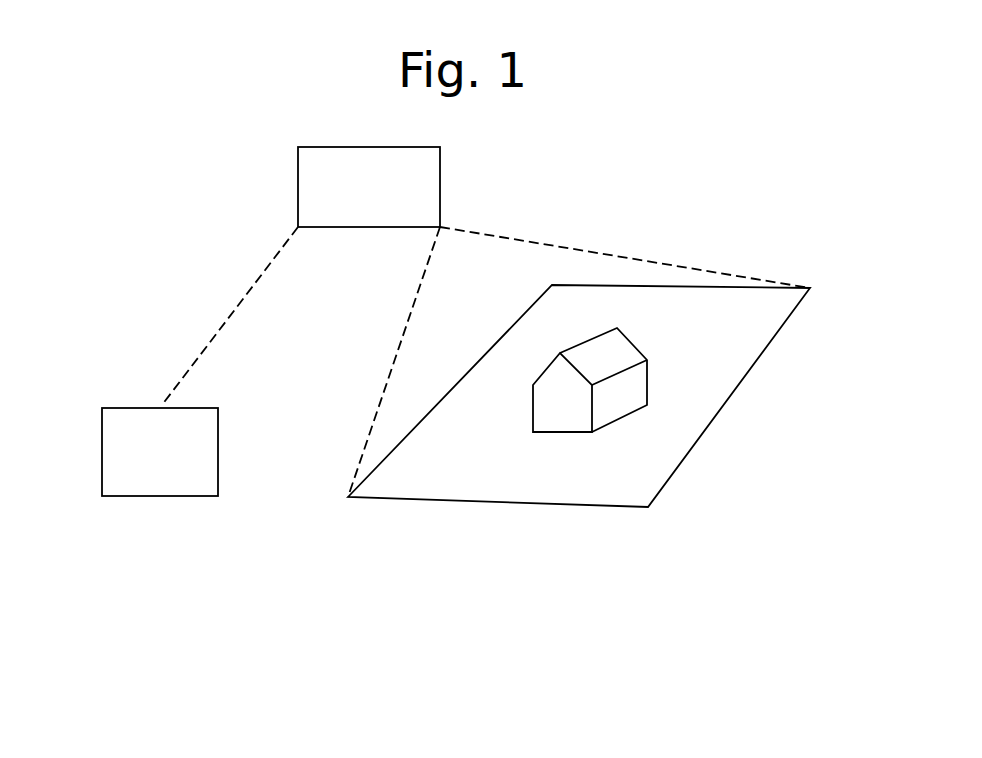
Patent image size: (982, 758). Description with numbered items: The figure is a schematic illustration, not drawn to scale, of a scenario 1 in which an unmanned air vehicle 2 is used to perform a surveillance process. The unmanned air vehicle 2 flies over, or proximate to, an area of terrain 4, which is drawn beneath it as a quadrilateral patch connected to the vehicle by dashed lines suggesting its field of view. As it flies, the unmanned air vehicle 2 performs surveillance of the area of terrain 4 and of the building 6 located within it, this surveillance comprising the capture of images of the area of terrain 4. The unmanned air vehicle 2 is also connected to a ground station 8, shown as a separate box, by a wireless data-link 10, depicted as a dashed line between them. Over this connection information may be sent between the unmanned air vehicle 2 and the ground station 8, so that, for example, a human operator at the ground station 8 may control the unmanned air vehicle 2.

The scenario 1 is at (667, 185).
The unmanned air vehicle (UAV) 2 is at (318, 183).
The area of terrain 4 is at (738, 390).
The building 6 is at (572, 417).
The ground station 8 is at (148, 463).
The wireless data-link 10 is at (223, 323).